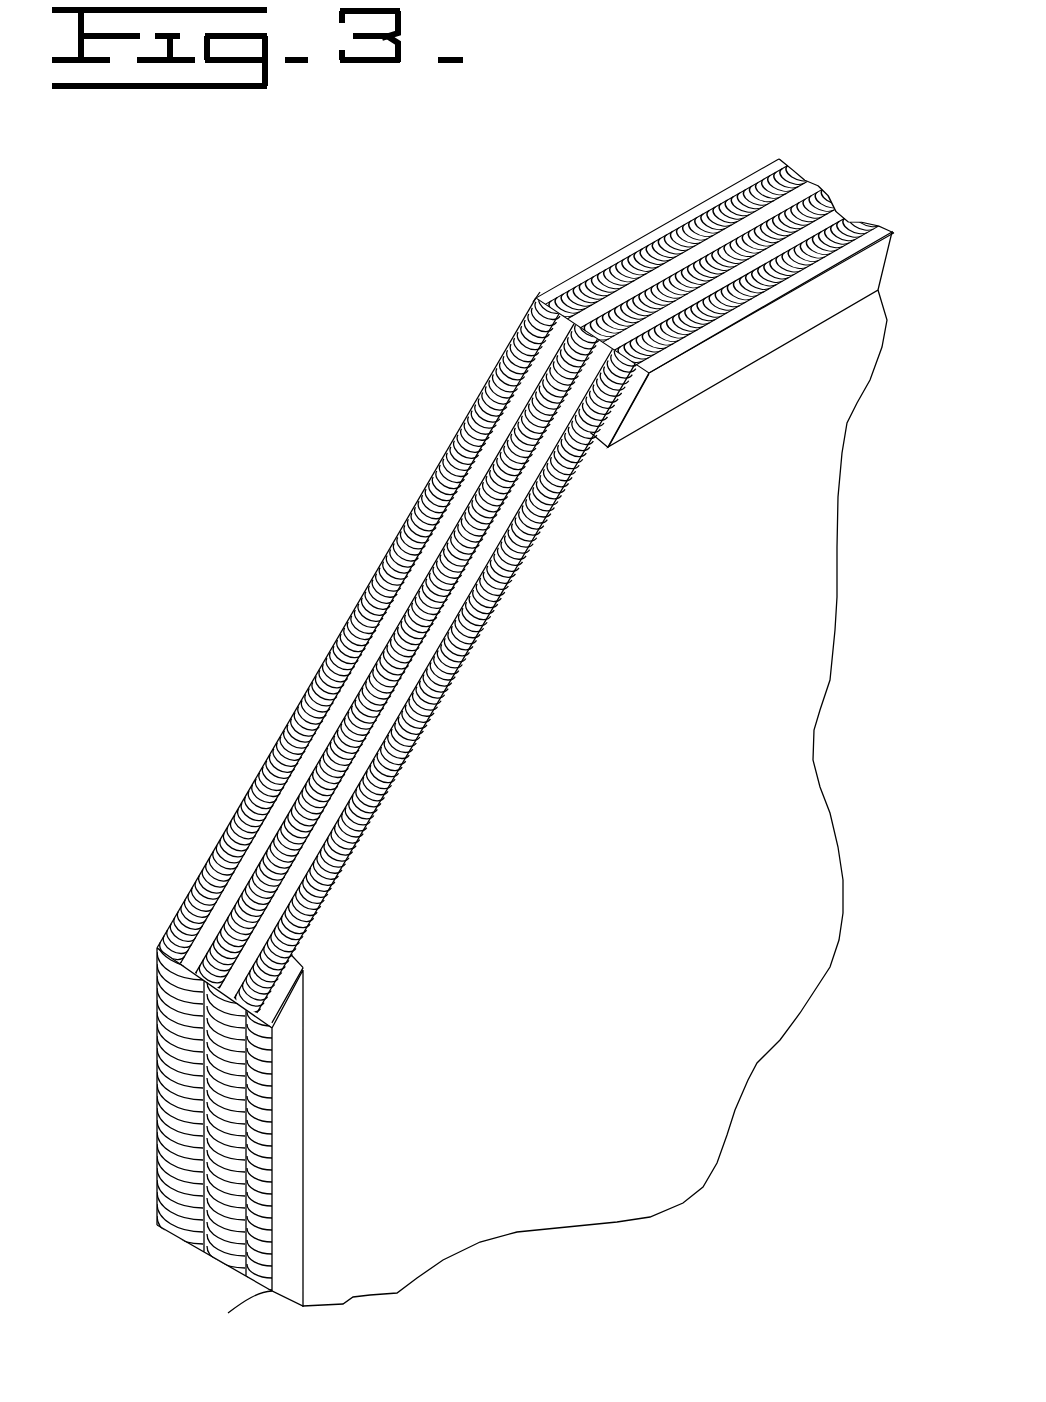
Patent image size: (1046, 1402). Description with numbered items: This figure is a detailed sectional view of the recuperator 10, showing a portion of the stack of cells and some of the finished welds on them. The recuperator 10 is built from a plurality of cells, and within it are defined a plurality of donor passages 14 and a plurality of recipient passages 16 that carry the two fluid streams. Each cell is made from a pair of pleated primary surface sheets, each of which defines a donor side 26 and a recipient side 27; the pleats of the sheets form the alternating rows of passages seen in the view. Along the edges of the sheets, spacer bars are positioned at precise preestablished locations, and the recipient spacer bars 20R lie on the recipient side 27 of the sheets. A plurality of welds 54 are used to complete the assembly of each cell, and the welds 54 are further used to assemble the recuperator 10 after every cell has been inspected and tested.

The recuperator 10 is at (257, 490).
The donor passages 14 is at (682, 275).
The recipient passages 16 is at (329, 710).
The recipient spacer bars 20R is at (548, 290).
The donor side 26 is at (767, 307).
The recipient side 27 is at (475, 476).
The welds 54 is at (306, 952).